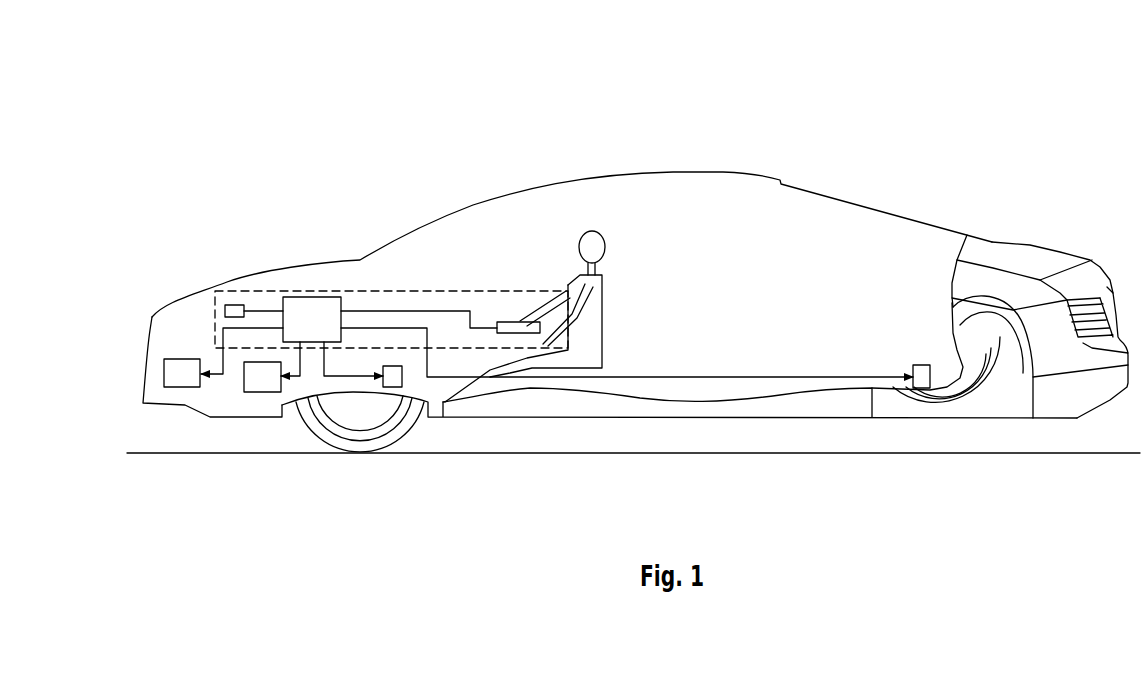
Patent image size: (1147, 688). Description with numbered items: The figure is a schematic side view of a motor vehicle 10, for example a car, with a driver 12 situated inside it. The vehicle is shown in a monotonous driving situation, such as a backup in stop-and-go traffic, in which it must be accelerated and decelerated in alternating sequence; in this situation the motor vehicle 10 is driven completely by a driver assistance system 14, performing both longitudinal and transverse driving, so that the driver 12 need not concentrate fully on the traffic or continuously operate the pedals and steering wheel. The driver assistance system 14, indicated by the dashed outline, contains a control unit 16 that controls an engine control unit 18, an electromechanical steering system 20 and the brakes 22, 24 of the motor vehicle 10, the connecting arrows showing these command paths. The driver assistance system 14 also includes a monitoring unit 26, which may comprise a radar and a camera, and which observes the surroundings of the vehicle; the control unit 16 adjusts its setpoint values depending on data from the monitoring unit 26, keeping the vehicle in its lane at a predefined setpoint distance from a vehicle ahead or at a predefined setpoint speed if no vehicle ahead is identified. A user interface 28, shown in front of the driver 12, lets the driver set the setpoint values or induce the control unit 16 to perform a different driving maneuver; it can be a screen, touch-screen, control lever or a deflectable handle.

The motor vehicle 10 is at (885, 170).
The driver 12 is at (598, 318).
The driver assistance system 14 is at (382, 288).
The control unit 16 is at (300, 330).
The engine control unit 18 is at (172, 372).
The electromechanical steering system 20 is at (260, 380).
The brake 22 is at (395, 380).
The brake 24 is at (921, 378).
The monitoring unit 26 is at (233, 305).
The user interface 28 is at (507, 322).